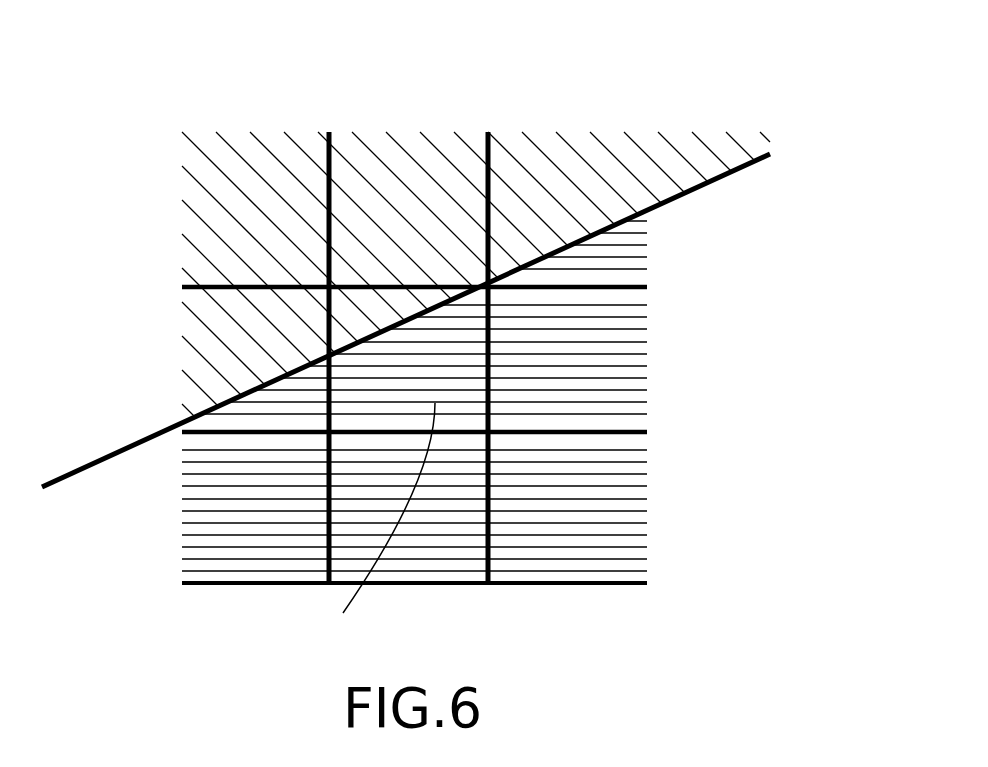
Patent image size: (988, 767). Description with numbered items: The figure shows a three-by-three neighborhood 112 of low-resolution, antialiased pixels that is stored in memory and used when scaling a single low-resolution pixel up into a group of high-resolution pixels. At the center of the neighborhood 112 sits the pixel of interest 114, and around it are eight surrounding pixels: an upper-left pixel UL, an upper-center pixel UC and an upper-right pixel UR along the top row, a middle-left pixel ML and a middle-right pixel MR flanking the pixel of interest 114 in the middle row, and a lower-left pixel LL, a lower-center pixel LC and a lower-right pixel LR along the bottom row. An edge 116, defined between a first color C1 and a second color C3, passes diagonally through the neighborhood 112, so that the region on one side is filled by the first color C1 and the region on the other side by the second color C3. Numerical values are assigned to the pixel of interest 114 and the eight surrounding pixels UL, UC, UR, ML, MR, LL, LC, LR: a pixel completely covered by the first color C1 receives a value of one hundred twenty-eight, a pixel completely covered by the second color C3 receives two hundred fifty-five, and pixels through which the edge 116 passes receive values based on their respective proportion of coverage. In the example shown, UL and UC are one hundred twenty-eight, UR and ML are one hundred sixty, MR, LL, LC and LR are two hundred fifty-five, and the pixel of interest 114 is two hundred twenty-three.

The 3×3 neighborhood 112 is at (846, 129).
The pixel of interest 114 is at (377, 525).
The edge 116 is at (93, 462).
The first color C1 is at (270, 118).
The second color C3 is at (675, 387).
The upper-left pixel UL is at (190, 188).
The upper-center pixel UC is at (438, 137).
The upper-right pixel UR is at (613, 142).
The middle-left pixel ML is at (193, 315).
The middle-right pixel MR is at (642, 333).
The lower-left pixel LL is at (195, 530).
The lower-center pixel LC is at (430, 570).
The lower-right pixel LR is at (633, 507).